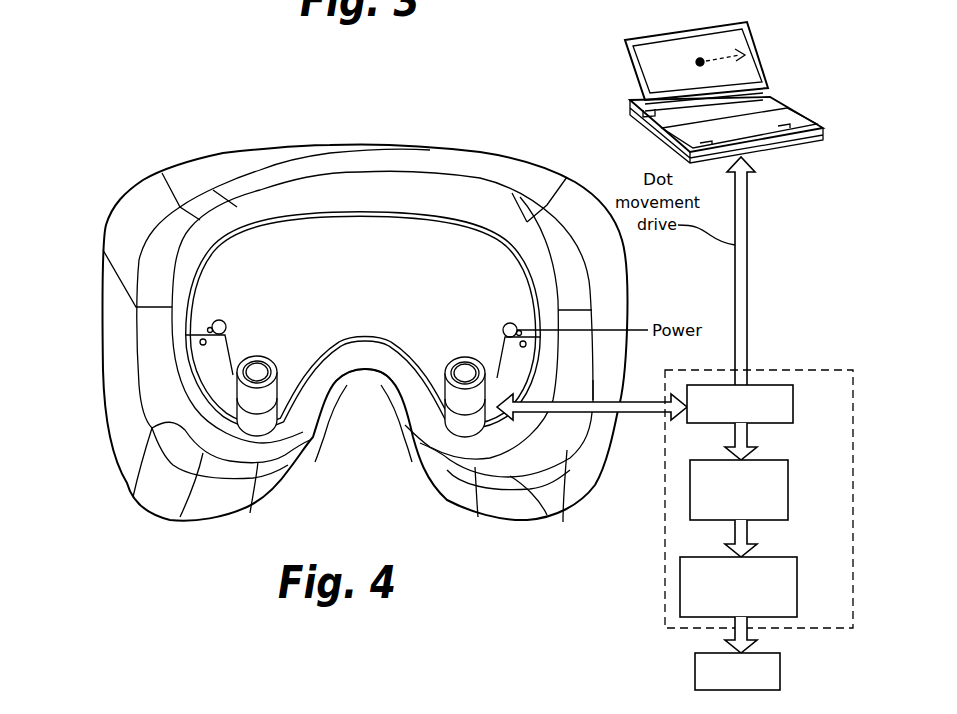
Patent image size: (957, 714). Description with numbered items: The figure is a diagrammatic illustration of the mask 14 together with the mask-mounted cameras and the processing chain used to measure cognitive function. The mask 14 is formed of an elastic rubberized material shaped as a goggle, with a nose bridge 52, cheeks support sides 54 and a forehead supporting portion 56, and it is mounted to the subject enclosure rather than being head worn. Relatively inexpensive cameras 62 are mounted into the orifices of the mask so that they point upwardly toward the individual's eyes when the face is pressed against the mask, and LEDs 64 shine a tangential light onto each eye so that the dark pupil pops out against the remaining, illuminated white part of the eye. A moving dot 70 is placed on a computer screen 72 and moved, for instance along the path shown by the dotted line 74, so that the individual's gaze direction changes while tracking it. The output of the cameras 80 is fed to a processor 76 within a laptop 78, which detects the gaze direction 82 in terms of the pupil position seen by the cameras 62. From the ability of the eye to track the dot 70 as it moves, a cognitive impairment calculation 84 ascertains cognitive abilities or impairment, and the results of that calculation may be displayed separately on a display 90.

The mask 14 is at (356, 309).
The nose bridge 52 is at (365, 374).
The cheeks support sides 54 is at (133, 497).
The forehead supporting portion 56 is at (330, 172).
The cameras 62 is at (273, 357).
The LEDs 64 is at (222, 320).
The moving dot 70 is at (697, 55).
The computer screen 72 is at (648, 32).
The dotted line 74 is at (723, 53).
The processor 76 is at (773, 424).
The laptop 78 is at (665, 572).
The output of the cameras 80 is at (593, 405).
The gaze direction 82 is at (790, 478).
The cognitive impairment calculation 84 is at (798, 590).
The display 90 is at (780, 672).